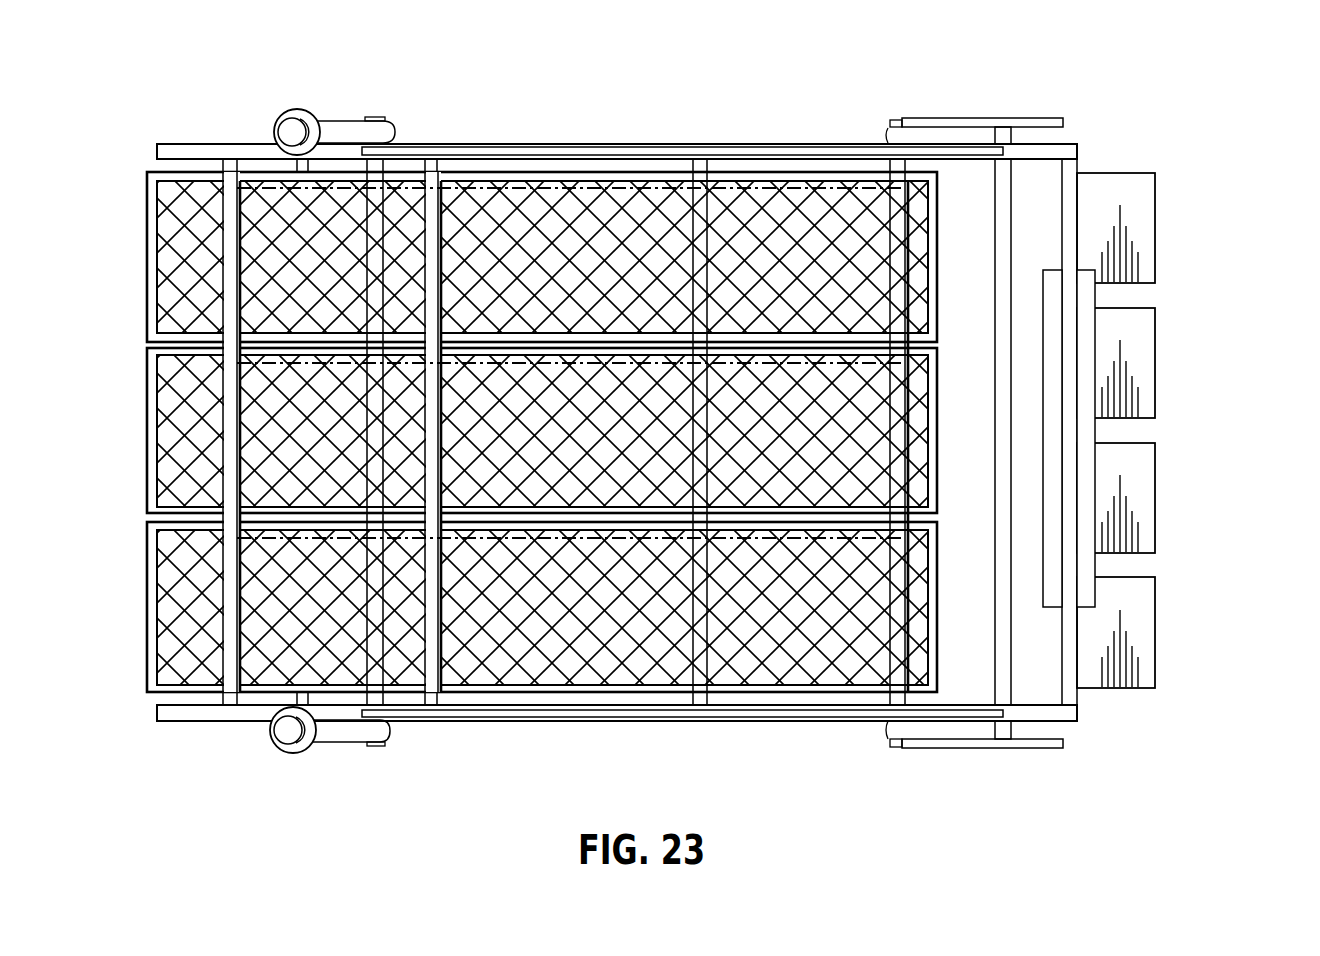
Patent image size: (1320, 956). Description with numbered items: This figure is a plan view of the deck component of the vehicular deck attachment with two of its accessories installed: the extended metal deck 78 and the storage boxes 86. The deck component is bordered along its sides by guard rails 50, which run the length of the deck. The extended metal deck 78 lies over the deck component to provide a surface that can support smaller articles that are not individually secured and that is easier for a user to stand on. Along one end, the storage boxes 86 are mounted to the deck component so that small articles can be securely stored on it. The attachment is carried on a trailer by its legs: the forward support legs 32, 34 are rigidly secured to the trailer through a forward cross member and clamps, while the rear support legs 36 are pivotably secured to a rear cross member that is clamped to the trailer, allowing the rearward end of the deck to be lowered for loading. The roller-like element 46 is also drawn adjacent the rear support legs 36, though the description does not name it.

The forward support leg 32 is at (1005, 130).
The forward support leg 34 is at (967, 132).
The rear support legs 36 is at (352, 120).
The roller 46 is at (290, 128).
The guard rails 50 is at (478, 147).
The extended metal deck 78 is at (557, 178).
The storage boxes 86 is at (1142, 362).